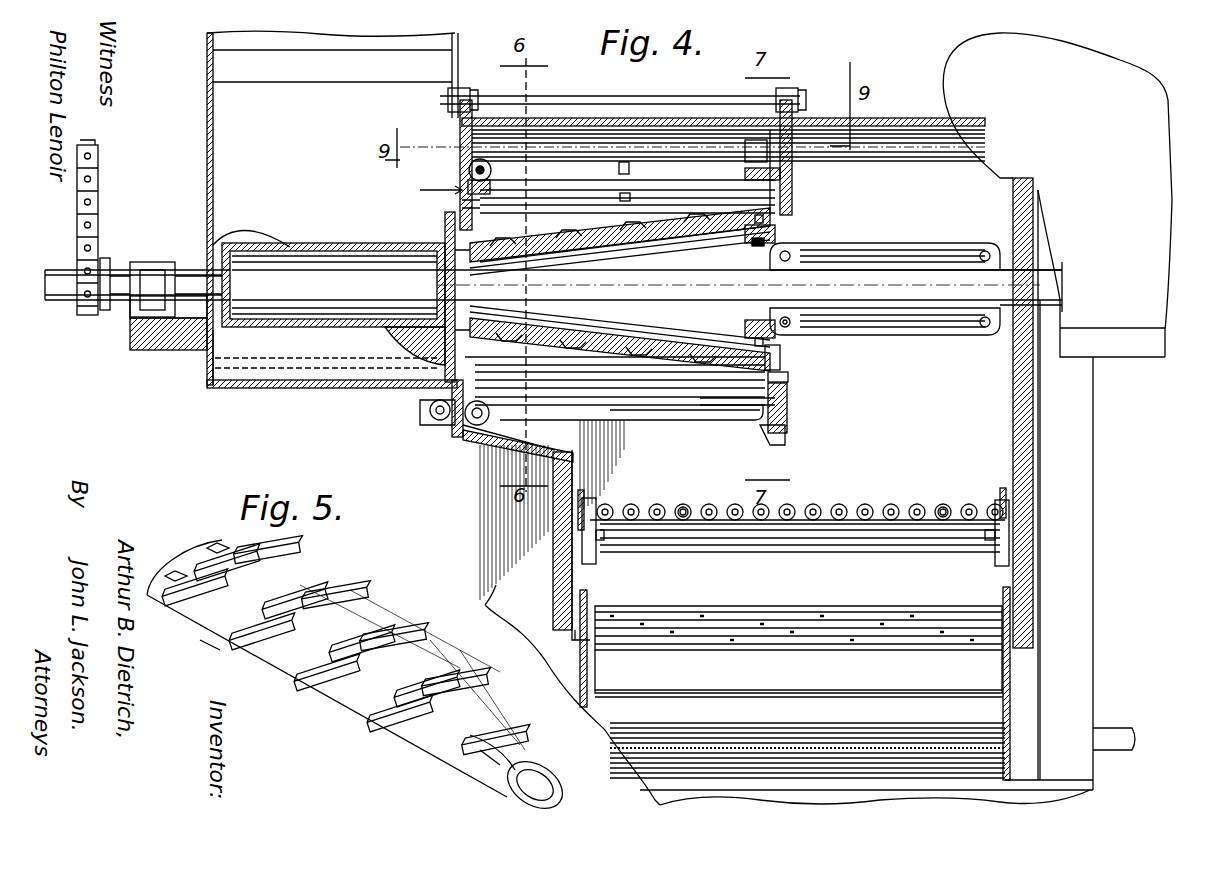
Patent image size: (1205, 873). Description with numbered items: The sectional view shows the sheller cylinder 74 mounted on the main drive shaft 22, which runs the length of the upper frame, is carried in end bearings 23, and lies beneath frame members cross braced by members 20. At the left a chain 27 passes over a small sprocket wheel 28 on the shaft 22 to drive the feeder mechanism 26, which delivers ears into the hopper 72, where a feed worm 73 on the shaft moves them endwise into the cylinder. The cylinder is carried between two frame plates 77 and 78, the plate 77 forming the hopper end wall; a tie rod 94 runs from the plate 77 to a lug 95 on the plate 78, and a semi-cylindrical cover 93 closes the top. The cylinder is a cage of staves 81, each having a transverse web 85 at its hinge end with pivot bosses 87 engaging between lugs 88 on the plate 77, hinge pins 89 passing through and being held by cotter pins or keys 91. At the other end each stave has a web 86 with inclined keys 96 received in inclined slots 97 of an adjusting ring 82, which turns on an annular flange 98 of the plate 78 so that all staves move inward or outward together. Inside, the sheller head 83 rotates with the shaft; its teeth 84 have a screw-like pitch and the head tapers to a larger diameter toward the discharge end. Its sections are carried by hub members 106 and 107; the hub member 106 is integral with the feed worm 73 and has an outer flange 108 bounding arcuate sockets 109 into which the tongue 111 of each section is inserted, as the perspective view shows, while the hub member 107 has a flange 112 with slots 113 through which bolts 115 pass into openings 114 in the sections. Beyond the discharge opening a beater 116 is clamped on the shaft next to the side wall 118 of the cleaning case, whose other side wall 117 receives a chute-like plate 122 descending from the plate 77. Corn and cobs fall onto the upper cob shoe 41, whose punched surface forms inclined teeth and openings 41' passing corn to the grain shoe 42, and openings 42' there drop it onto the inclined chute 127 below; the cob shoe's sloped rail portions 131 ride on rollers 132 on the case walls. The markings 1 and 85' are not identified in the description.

In FIG. 4, the frame 1 is at (799, 673).
In FIG. 4, the cross brace members 20 is at (158, 350).
In FIG. 4, the main drive shaft 22 is at (245, 330).
In FIG. 4, the end bearings 23 is at (168, 262).
In FIG. 4, the feeder mechanism 26 is at (208, 50).
In FIG. 4, the chain 27 is at (99, 180).
In FIG. 4, the small sprocket wheel 28 is at (105, 258).
In FIG. 4, the upper cob shoe 41 is at (797, 514).
In FIG. 4, the inclined teeth and punched openings 41' is at (814, 497).
In FIG. 4, the grain shoe 42 is at (798, 611).
In FIG. 4, the openings in grain shoe 42' is at (795, 675).
In FIG. 4, the hopper 72 is at (230, 108).
In FIG. 4, the feed worm 73 is at (272, 246).
In FIG. 4, the sheller cylinder 74 is at (450, 190).
In FIG. 4, the frame plate 77 is at (472, 170).
In FIG. 4, the frame plate 78 is at (800, 166).
In FIG. 4, the staves 81 is at (645, 160).
In FIG. 4, the adjusting ring 82 is at (765, 440).
In FIG. 4, the sheller head 83 is at (663, 240).
In FIG. 4, the teeth 84 is at (645, 232).
In FIG. 5, the teeth 84 is at (350, 596).
In FIG. 4, the transverse web 85 is at (446, 251).
In FIG. 5, the blade 85' is at (235, 666).
In FIG. 4, the transverse web 86 is at (735, 165).
In FIG. 4, the pivot bosses 87 is at (470, 162).
In FIG. 4, the apertured lugs 88 is at (452, 430).
In FIG. 4, the hinge pins 89 is at (420, 176).
In FIG. 4, the cotter pins 91 is at (440, 422).
In FIG. 4, the semi-cylindrical cover 93 is at (612, 118).
In FIG. 4, the tie rod 94 is at (582, 96).
In FIG. 4, the lug 95 is at (796, 92).
In FIG. 4, the inclined lugs 96 is at (790, 415).
In FIG. 4, the inclined slots 97 is at (790, 385).
In FIG. 4, the annular flange 98 is at (770, 225).
In FIG. 4, the end hub member 106 is at (445, 218).
In FIG. 4, the hub member 107 is at (725, 355).
In FIG. 4, the outer flange 108 is at (392, 340).
In FIG. 4, the arcuate sockets 109 is at (430, 262).
In FIG. 4, the tongue 111 is at (480, 262).
In FIG. 5, the tongue 111 is at (542, 790).
In FIG. 4, the flange 112 is at (712, 398).
In FIG. 4, the slots 113 is at (770, 228).
In FIG. 4, the openings 114 is at (766, 240).
In FIG. 5, the openings 114 is at (215, 548).
In FIG. 4, the bolts 115 is at (790, 240).
In FIG. 4, the rotating beater 116 is at (945, 262).
In FIG. 4, the side wall 117 is at (553, 500).
In FIG. 4, the side wall 118 is at (1013, 435).
In FIG. 4, the chute-like plate 122 is at (480, 440).
In FIG. 4, the inclined chute 127 is at (695, 748).
In FIG. 4, the rail portions 131 is at (582, 530).
In FIG. 4, the rollers 132 is at (598, 575).